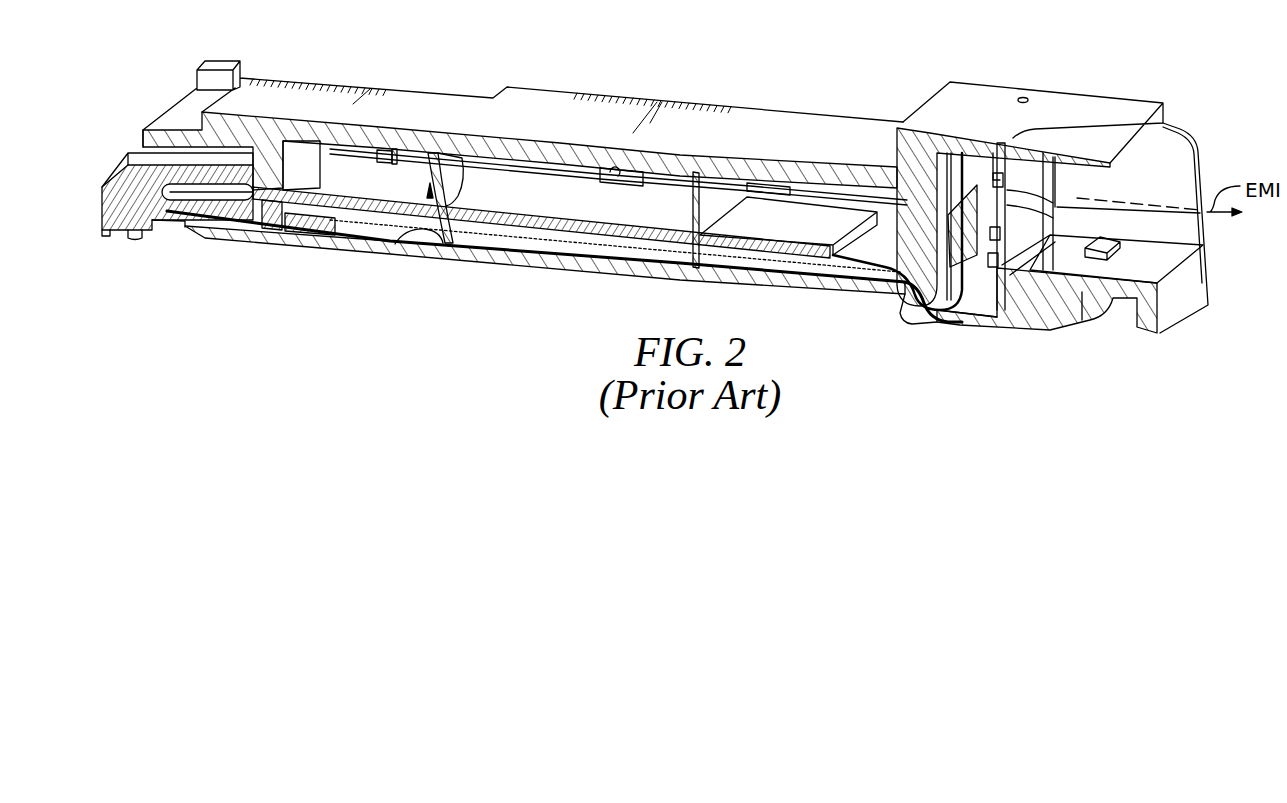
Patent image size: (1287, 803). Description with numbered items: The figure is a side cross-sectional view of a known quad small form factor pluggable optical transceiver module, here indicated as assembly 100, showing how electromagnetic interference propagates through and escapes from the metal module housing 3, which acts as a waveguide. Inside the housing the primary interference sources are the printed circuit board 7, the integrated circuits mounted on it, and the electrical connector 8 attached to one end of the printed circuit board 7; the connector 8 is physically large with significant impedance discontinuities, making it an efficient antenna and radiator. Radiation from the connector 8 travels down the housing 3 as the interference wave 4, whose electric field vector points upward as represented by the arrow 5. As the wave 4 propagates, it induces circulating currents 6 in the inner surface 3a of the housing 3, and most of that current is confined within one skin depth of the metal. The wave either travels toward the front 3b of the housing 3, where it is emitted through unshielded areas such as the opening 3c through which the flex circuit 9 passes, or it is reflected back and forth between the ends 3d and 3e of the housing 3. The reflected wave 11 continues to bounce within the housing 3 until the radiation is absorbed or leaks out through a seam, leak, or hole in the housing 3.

The connector 100 is at (796, 42).
The module housing 3 is at (580, 267).
The inner surface 3a is at (517, 240).
The front 3b is at (1170, 158).
The opening 3c is at (920, 320).
The end 3d is at (913, 177).
The end 3e is at (293, 165).
The EMI wave 4 is at (450, 242).
The arrow 5 is at (432, 202).
The circulating currents 6 is at (403, 230).
The printed circuit board 7 is at (327, 217).
The electrical connector 8 is at (217, 220).
The flex circuit 9 is at (867, 255).
The reflected EMI wave 11 is at (677, 263).